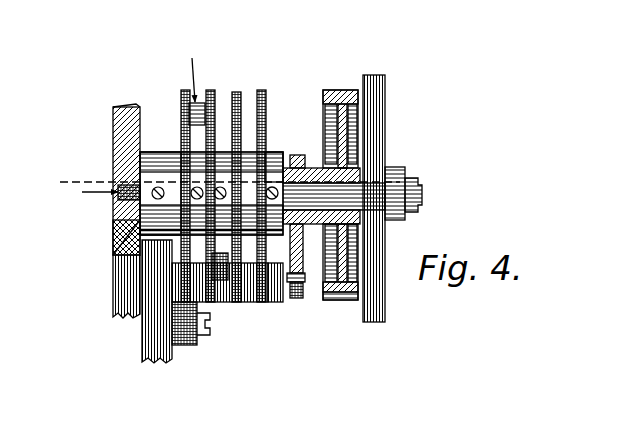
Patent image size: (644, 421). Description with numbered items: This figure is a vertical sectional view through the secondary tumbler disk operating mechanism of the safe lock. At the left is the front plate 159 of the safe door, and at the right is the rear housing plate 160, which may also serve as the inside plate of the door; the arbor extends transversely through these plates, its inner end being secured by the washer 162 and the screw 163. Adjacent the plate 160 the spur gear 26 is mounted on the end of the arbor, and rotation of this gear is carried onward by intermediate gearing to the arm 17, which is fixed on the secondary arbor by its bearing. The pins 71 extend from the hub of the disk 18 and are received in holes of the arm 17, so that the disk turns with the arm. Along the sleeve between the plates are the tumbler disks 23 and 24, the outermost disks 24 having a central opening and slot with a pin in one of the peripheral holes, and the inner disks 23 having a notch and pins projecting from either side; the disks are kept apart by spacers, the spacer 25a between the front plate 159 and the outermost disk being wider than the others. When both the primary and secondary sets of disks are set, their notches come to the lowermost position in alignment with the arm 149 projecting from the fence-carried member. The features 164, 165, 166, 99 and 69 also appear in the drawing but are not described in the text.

The front plate 159 is at (112, 138).
The wedge member 164 is at (136, 217).
The arm 149 is at (138, 343).
The spacer 25a is at (162, 150).
The tumbler disk 24 is at (185, 88).
The tumbler disk 23 is at (210, 88).
The disk 18 is at (274, 150).
The screw 165 is at (273, 199).
The flange 166 is at (318, 196).
The pin 71 is at (296, 170).
The collar 99 is at (312, 223).
The arm 17 is at (298, 300).
The sleeve 69 is at (275, 296).
The spur gear 26 is at (340, 88).
The rear housing plate 160 is at (385, 113).
The washer 162 is at (403, 169).
The screw 163 is at (421, 187).